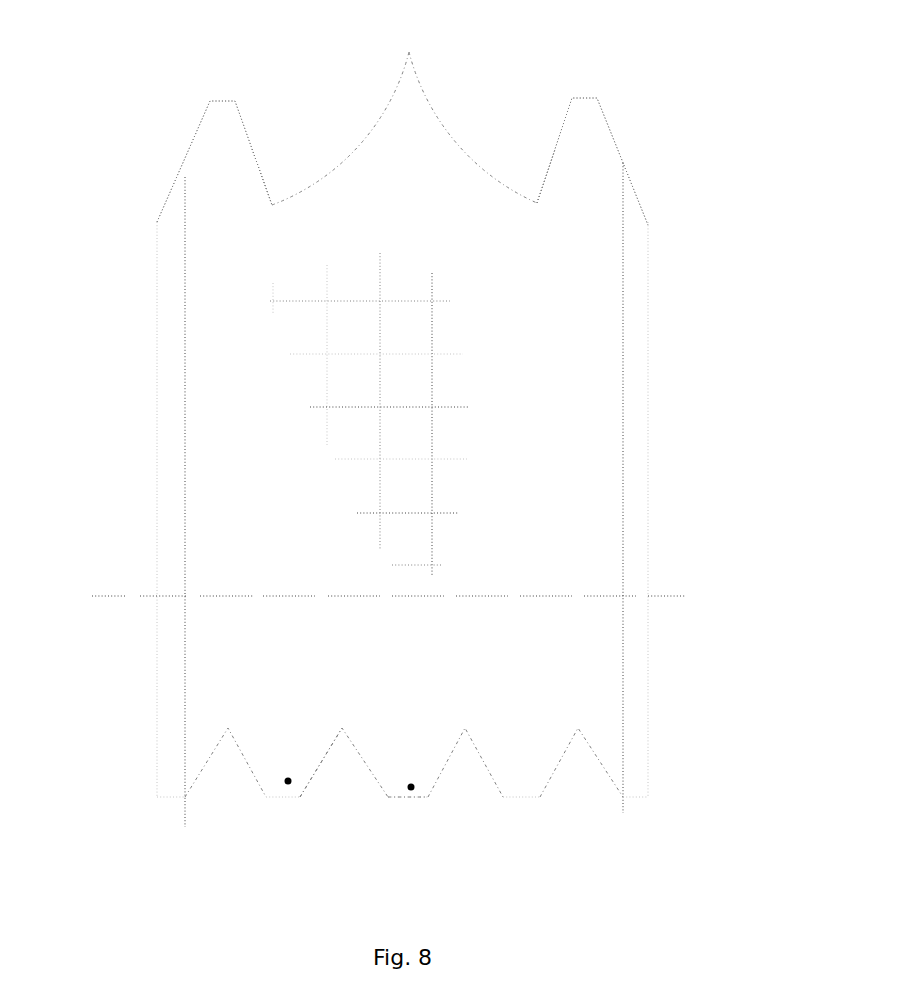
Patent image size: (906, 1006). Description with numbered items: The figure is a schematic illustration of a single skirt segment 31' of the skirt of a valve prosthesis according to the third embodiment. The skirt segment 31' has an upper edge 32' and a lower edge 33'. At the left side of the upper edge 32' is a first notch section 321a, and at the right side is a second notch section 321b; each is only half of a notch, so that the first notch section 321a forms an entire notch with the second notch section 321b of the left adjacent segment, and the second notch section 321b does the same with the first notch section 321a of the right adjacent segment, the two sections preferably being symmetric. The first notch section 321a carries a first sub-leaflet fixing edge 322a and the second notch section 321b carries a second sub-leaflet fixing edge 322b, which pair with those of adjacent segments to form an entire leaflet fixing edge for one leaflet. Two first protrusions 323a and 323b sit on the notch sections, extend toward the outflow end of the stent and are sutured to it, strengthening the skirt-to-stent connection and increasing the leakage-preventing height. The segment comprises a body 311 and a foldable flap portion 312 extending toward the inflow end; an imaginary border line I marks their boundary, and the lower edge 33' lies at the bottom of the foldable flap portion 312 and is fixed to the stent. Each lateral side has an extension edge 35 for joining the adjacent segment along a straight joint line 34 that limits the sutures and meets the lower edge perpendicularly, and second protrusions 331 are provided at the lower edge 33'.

The upper edge of skirt 32' is at (351, 161).
The skirt segment 31' is at (115, 509).
The lower edge of skirt 33' is at (404, 808).
The first notch section 321a is at (285, 155).
The second notch section 321b is at (528, 152).
The first sub-leaflet fixing edge 322a is at (353, 152).
The second sub-leaflet fixing edge 322b is at (453, 138).
The first protrusion 323a is at (218, 153).
The first protrusion 323b is at (590, 135).
The joint line 34 is at (623, 270).
The extension edge 35 is at (633, 314).
The body 311 is at (540, 458).
The foldable flap portion 312 is at (210, 663).
The second protrusion 331 is at (411, 787).
The border line I is at (233, 596).